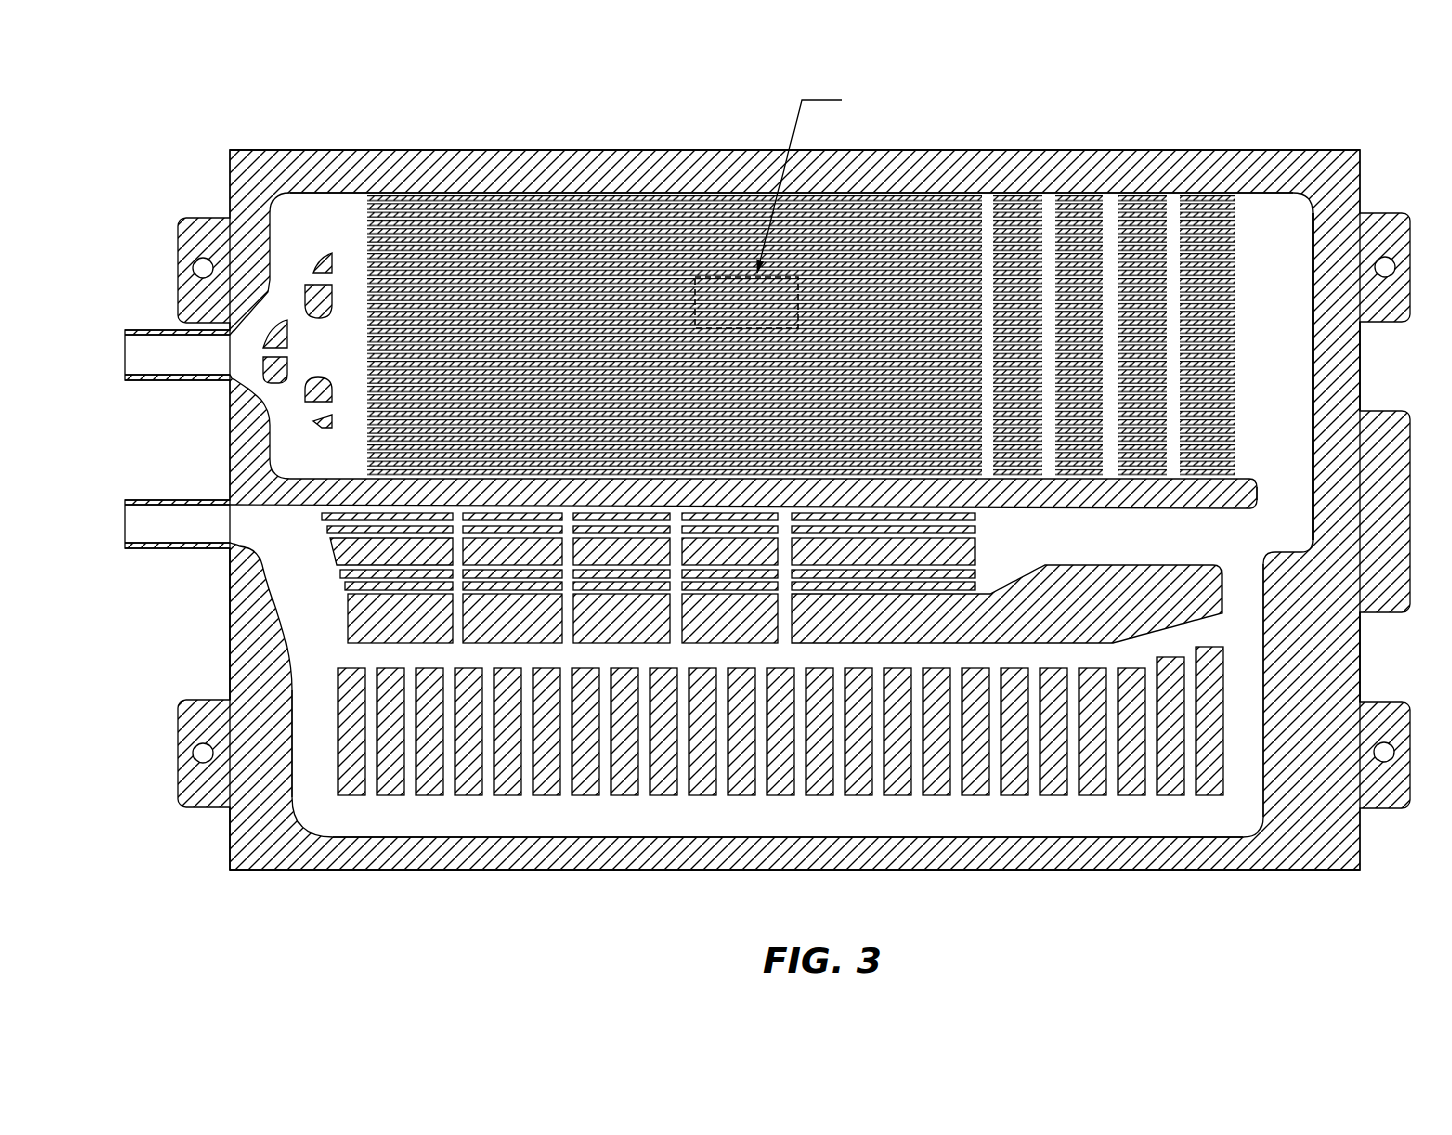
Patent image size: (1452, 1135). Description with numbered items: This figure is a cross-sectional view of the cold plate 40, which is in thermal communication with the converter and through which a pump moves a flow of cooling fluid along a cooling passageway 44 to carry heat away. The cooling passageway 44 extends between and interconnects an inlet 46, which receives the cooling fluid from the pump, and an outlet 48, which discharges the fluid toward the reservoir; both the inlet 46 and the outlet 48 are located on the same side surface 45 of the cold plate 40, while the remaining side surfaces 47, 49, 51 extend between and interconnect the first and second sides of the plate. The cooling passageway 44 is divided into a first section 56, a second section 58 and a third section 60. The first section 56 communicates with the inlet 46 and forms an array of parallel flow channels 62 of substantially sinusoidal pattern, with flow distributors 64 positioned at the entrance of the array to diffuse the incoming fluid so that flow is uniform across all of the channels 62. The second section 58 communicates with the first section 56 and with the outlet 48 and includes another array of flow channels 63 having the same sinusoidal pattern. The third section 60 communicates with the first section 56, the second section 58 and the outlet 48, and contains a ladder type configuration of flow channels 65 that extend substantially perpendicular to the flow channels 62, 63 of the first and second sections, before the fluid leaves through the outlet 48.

The cold plate 40 is at (203, 123).
The cooling passageway 44 is at (310, 167).
The side surface 45 is at (228, 627).
The inlet 46 is at (143, 355).
The side surface 47 is at (623, 148).
The outlet 48 is at (157, 525).
The side surface 49 is at (1360, 373).
The side surface 51 is at (875, 873).
The first section 56 is at (801, 279).
The second section 58 is at (1210, 533).
The third section 60 is at (1267, 764).
The flow channels 62 is at (532, 192).
The flow channels 63 is at (985, 573).
The flow distributors 64 is at (310, 258).
The flow channels 65 is at (1037, 807).